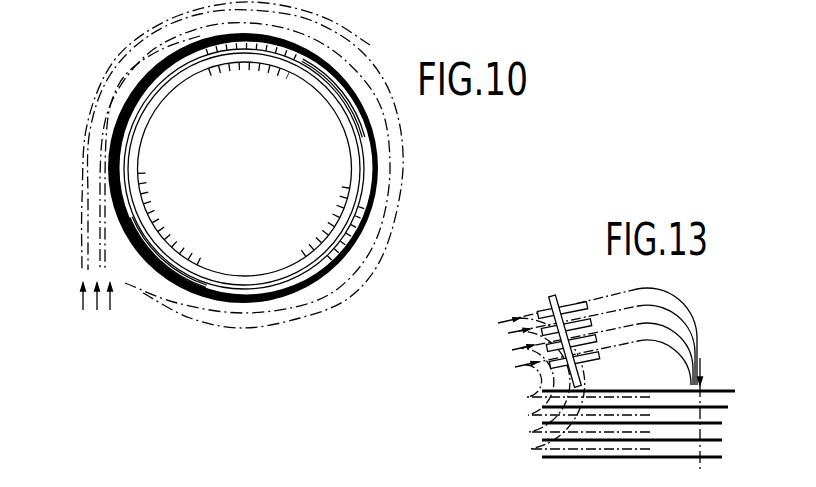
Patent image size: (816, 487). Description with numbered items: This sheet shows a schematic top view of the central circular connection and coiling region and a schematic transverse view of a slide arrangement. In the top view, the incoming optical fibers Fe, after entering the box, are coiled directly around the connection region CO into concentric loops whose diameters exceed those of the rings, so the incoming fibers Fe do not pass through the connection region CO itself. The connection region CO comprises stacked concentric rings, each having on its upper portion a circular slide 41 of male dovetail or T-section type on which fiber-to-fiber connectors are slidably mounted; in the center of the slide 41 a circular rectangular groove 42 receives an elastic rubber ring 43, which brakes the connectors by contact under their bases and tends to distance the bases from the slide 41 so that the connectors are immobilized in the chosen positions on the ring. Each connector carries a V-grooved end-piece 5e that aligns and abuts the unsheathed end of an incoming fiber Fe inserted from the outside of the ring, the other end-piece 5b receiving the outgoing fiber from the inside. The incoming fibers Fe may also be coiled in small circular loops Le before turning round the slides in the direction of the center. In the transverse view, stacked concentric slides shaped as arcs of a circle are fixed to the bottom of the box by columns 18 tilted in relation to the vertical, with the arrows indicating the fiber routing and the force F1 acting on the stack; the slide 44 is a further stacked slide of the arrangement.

In FIG. 10, the incoming optical fiber Fe is at (120, 296).
In FIG. 10, the connection region CO is at (167, 97).
In FIG. 10, the circular slide 41 is at (245, 169).
In FIG. 13, the circular slide 41 is at (601, 356).
In FIG. 10, the circular rectangular groove 42 is at (248, 71).
In FIG. 10, the elastic rubber ring 43 is at (323, 221).
In FIG. 13, the coil 44 is at (584, 304).
In FIG. 10, the first V-grooved end-piece 5e is at (305, 52).
In FIG. 10, the inner winding portion 5b is at (293, 71).
In FIG. 10, the small circular loops of incoming fibers Le is at (396, 210).
In FIG. 13, the column 18 is at (556, 296).
In FIG. 13, the force F1 is at (742, 422).